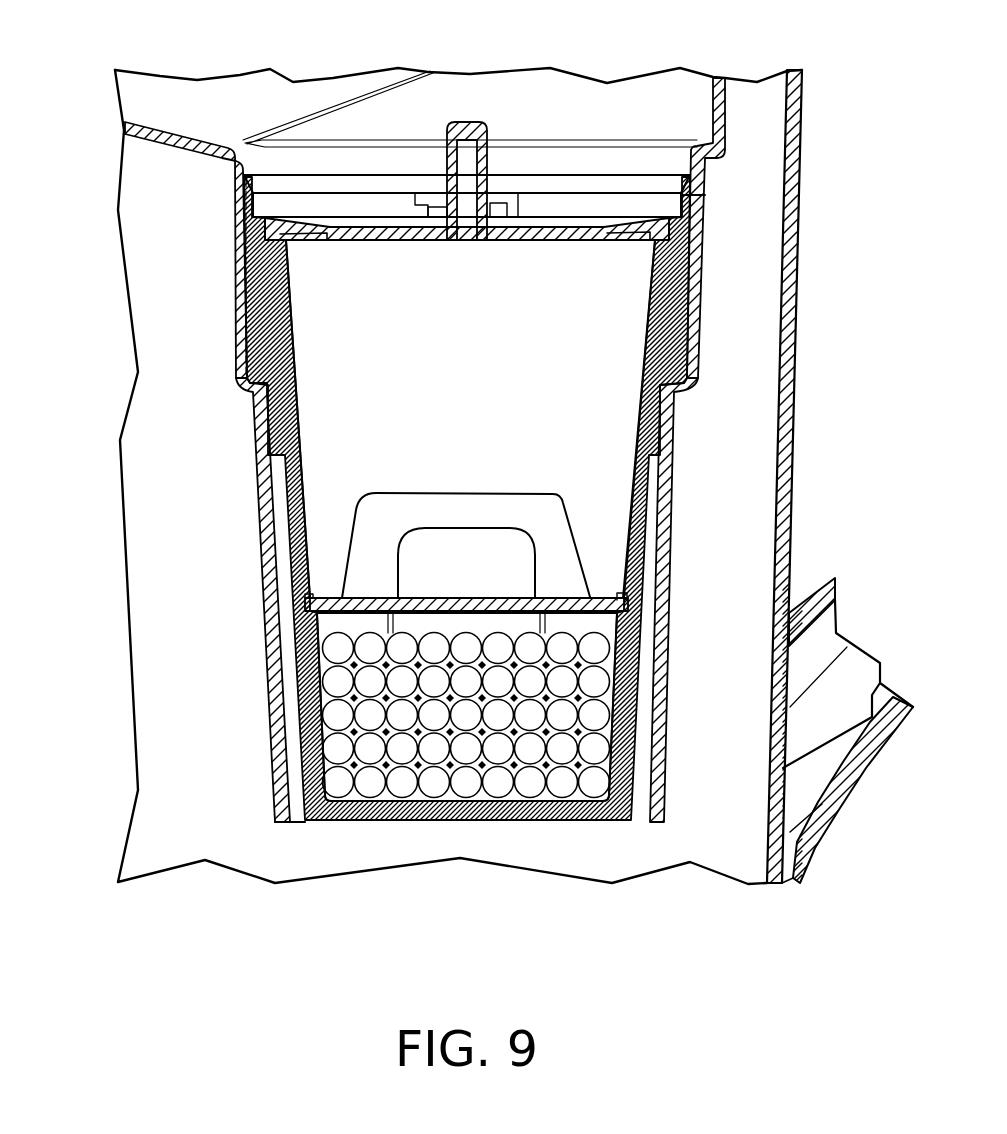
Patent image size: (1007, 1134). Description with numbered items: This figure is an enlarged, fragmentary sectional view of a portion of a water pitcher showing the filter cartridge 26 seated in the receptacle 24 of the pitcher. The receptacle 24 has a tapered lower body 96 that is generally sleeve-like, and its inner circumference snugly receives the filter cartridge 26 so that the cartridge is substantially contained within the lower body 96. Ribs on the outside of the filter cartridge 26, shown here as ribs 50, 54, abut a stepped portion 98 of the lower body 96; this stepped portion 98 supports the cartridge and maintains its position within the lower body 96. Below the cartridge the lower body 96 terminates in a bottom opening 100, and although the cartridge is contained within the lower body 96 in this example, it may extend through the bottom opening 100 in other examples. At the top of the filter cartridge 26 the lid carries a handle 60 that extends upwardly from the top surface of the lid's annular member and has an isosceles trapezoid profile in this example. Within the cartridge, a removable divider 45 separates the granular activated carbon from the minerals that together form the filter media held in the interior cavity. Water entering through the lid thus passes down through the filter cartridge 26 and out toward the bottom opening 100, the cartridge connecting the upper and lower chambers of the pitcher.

The receptacle 24 is at (152, 133).
The filter cartridge 26 is at (661, 493).
The removable divider 45 is at (602, 603).
The rib 50 is at (268, 340).
The rib 54 is at (667, 306).
The handle 60 is at (463, 120).
The tapered lower body 96 is at (240, 268).
The stepped portion 98 is at (240, 392).
The bottom opening 100 is at (298, 806).